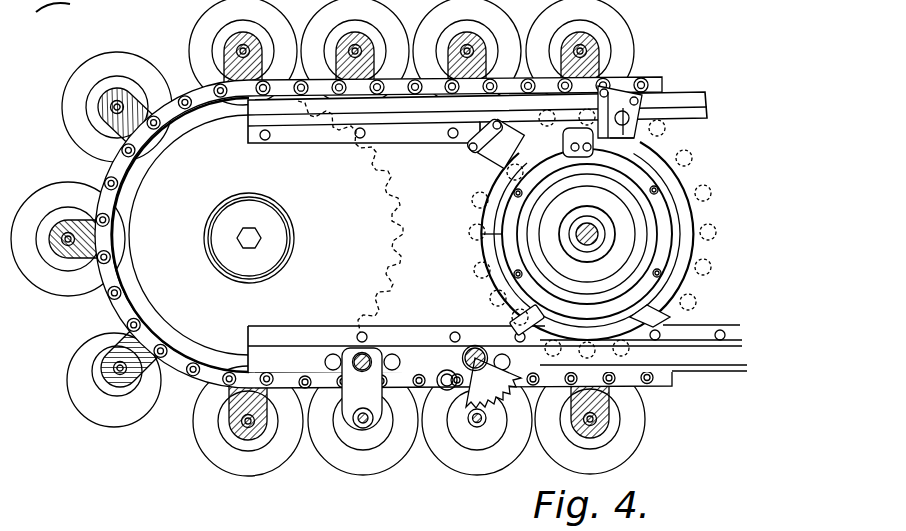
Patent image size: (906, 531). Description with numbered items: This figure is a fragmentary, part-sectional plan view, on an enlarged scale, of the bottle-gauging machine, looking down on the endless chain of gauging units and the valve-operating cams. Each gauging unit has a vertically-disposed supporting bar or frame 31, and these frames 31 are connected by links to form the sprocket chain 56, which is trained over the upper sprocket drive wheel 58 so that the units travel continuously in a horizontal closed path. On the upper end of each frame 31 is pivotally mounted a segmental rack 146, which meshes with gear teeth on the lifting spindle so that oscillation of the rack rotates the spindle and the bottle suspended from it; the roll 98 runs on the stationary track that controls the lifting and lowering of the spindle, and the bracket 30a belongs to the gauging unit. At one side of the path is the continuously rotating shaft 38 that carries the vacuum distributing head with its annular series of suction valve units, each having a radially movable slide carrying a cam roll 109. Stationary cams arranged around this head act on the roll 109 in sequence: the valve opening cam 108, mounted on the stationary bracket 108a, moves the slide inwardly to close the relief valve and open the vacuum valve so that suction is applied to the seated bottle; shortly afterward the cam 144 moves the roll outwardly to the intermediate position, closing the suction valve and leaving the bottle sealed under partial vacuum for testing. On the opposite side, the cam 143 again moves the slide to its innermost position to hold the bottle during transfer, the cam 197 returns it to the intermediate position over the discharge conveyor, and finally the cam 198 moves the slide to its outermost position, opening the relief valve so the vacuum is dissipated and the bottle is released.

The upper sprocket chain 56 is at (113, 203).
The wheel 98 is at (92, 337).
The supporting bar or frame 31 is at (228, 412).
The hanger bracket 30a is at (366, 420).
The segmental rack 146 is at (479, 387).
The upper sprocket drive wheel 58 is at (378, 162).
The stationary cam 143 is at (472, 146).
The stationary cam 144 is at (565, 148).
The continuously rotating shaft 38 is at (583, 230).
The valve opening cam 108 is at (630, 82).
The cam roll 109 is at (656, 130).
The stationary bracket 108a is at (645, 128).
The cam 197 is at (519, 316).
The cam 198 is at (668, 318).